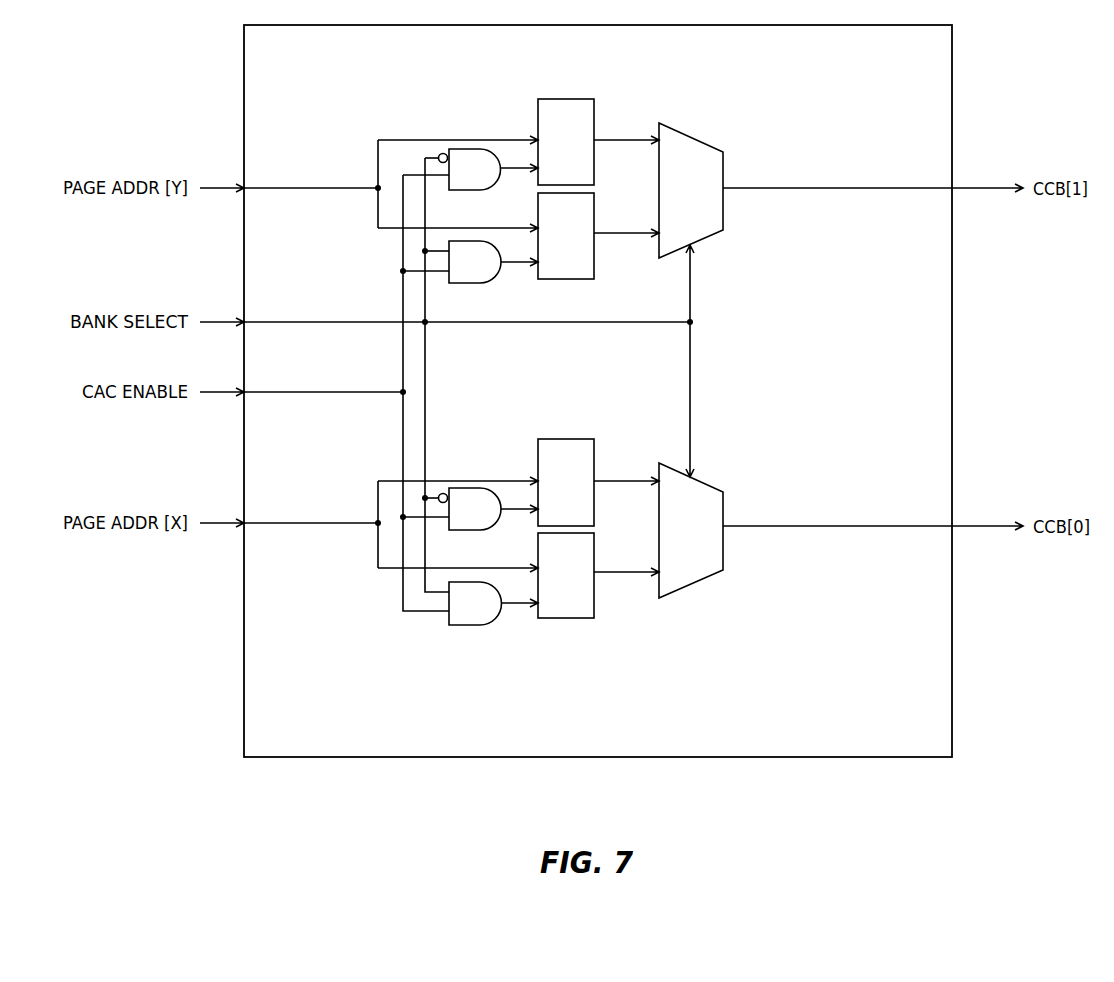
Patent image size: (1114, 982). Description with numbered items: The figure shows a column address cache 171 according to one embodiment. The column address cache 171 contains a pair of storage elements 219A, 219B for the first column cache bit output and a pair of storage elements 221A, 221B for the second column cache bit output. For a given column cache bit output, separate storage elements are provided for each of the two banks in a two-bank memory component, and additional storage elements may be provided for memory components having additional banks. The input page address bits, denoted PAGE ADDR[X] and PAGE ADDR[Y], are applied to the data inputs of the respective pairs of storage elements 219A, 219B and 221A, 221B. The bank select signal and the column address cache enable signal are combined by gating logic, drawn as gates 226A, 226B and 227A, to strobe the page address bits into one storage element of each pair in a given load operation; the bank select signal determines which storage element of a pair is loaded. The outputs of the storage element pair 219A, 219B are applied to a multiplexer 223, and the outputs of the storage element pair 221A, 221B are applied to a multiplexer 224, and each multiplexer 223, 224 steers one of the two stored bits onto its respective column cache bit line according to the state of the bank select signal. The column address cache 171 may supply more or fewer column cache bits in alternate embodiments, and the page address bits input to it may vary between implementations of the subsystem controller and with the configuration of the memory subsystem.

The column address cache 171 is at (793, 718).
The storage element 219A is at (566, 618).
The storage element 219B is at (566, 439).
The storage element 221A is at (566, 279).
The storage element 221B is at (566, 99).
The multiplexer 223 is at (723, 553).
The multiplexer 224 is at (723, 208).
The gate 226A is at (472, 625).
The gate 226B is at (466, 530).
The gate 227A is at (470, 283).